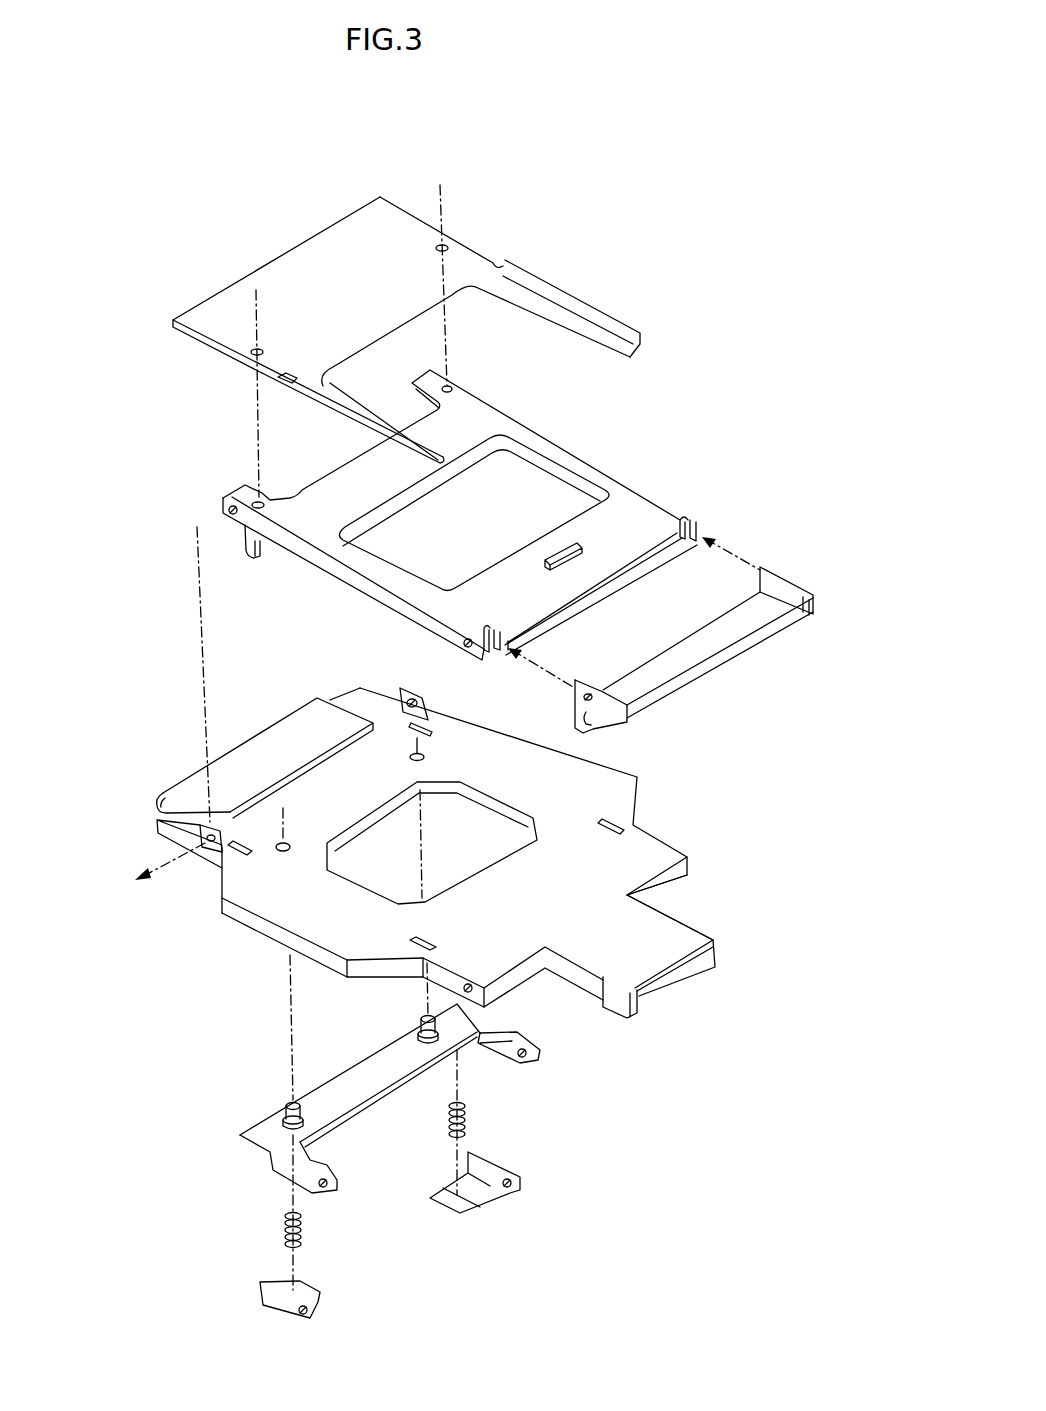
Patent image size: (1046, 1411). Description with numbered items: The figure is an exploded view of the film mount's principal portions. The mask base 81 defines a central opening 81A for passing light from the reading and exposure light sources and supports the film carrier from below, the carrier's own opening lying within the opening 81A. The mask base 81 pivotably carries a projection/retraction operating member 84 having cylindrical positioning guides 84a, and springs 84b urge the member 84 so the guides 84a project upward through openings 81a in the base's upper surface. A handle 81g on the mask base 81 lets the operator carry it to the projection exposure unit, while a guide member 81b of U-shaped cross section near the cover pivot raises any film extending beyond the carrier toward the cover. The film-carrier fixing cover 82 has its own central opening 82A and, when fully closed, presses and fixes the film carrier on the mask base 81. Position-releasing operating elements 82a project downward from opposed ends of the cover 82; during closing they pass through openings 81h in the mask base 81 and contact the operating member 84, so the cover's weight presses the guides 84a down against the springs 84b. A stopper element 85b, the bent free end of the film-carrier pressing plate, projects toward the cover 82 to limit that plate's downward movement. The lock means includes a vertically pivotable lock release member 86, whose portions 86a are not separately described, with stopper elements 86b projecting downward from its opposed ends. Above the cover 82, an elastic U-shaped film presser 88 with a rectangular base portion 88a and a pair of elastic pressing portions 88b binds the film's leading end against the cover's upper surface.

The mask base 81 is at (467, 837).
The opening 81A is at (482, 828).
The openings 81a is at (425, 756).
The guide member 81b is at (285, 727).
The handle 81g is at (660, 923).
The openings 81h is at (430, 720).
The film-carrier fixing cover 82 is at (460, 511).
The opening 82A is at (510, 470).
The position-releasing operating elements 82a is at (253, 560).
The projection/retraction operating member 84 is at (390, 1154).
The cylindrical positioning guides 84a is at (422, 1013).
The springs 84b is at (465, 1108).
The stopper element 85b is at (553, 553).
The lock release member 86 is at (660, 613).
The engaging claw 86a is at (767, 567).
The stopper elements 86b is at (590, 730).
The elastic film presser 88 is at (404, 330).
The rectangular base portion 88a is at (240, 352).
The elastic pressing portions 88b is at (585, 297).